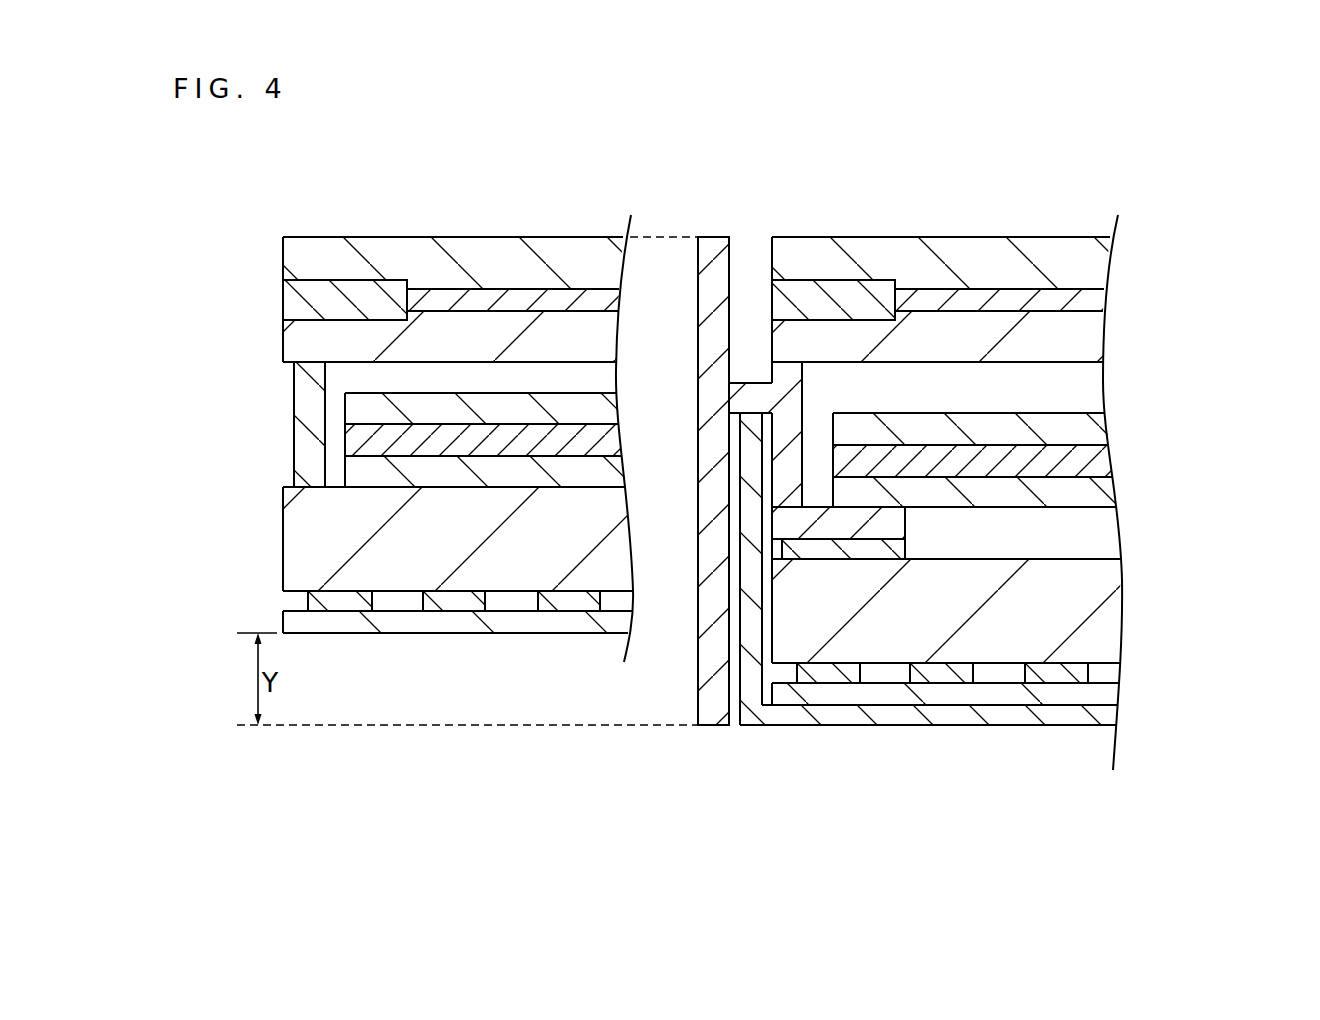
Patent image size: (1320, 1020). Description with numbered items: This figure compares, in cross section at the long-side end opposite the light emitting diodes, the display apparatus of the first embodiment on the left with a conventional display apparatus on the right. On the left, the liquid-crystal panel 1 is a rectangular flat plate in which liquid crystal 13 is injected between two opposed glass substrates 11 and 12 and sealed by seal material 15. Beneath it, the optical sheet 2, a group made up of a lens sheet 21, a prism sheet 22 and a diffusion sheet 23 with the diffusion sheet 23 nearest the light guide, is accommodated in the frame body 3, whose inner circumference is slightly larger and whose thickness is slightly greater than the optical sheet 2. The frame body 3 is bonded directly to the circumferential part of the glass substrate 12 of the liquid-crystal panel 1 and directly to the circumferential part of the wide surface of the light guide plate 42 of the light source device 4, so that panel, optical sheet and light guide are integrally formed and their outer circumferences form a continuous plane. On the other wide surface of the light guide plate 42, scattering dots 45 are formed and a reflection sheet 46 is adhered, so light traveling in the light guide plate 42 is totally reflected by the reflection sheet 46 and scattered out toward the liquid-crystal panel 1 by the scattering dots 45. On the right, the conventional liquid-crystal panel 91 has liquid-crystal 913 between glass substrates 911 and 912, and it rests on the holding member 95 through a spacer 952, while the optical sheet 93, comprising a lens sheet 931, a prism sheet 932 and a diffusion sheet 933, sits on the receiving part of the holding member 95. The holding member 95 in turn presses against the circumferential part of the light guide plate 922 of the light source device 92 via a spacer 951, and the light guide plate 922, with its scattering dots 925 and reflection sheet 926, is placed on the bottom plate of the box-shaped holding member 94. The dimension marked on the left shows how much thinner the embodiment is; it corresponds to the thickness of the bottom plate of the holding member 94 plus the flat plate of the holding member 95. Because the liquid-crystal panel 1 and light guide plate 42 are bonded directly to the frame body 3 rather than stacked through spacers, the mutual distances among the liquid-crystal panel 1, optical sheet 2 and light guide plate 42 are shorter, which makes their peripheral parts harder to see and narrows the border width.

The liquid-crystal panel 1 is at (413, 248).
The glass substrate 11 is at (377, 248).
The glass substrate 12 is at (447, 325).
The liquid crystal 13 is at (422, 292).
The seal material 15 is at (293, 303).
The optical sheet 2 is at (485, 298).
The lens sheet 21 is at (515, 407).
The prism sheet 22 is at (539, 432).
The diffusion sheet 23 is at (582, 465).
The frame body 3 is at (304, 435).
The light source device 4 is at (414, 595).
The light guide plate 42 is at (303, 523).
The scattering dots 45 is at (337, 611).
The reflection sheet 46 is at (542, 613).
The liquid-crystal panel 91 is at (941, 248).
The glass substrate 911 is at (903, 252).
The glass substrate 912 is at (1047, 330).
The liquid-crystal 913 is at (985, 298).
The light source device 92 is at (1000, 659).
The light guide plate 922 is at (1106, 630).
The scattering dots 925 is at (820, 681).
The reflection sheet 926 is at (1062, 706).
The optical sheet 93 is at (1056, 449).
The lens sheet 931 is at (1087, 428).
The prism sheet 932 is at (1083, 462).
The diffusion sheet 933 is at (1024, 487).
The holding member 94 is at (774, 717).
The holding member 95 is at (713, 243).
The spacer 951 is at (907, 547).
The spacer 952 is at (776, 372).